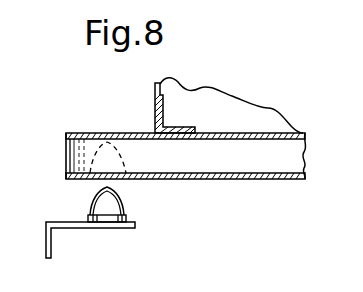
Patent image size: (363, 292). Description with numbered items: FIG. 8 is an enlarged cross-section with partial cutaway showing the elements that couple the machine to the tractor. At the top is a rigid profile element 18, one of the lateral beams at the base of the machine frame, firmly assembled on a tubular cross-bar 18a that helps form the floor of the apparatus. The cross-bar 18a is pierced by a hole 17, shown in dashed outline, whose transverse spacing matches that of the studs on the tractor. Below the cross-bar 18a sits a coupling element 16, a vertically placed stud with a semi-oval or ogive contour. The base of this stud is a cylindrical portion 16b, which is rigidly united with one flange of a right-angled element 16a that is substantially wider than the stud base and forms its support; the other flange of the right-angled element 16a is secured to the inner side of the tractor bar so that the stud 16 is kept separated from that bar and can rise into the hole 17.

The coupling element 16 is at (122, 207).
The right-angled element 16a is at (70, 230).
The cylindrical portion 16b is at (129, 216).
The hole 17 is at (98, 179).
The profile element 18 is at (168, 116).
The tubular cross-bar 18a is at (218, 162).